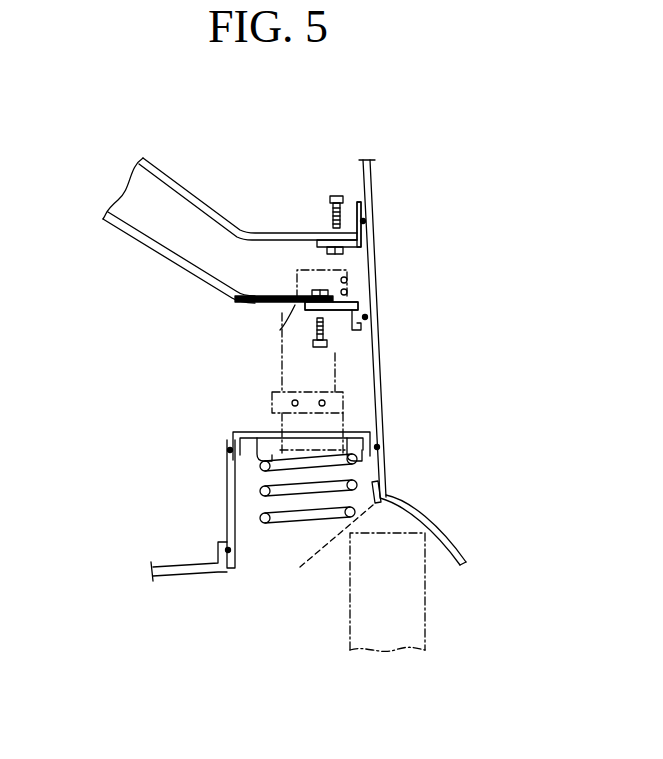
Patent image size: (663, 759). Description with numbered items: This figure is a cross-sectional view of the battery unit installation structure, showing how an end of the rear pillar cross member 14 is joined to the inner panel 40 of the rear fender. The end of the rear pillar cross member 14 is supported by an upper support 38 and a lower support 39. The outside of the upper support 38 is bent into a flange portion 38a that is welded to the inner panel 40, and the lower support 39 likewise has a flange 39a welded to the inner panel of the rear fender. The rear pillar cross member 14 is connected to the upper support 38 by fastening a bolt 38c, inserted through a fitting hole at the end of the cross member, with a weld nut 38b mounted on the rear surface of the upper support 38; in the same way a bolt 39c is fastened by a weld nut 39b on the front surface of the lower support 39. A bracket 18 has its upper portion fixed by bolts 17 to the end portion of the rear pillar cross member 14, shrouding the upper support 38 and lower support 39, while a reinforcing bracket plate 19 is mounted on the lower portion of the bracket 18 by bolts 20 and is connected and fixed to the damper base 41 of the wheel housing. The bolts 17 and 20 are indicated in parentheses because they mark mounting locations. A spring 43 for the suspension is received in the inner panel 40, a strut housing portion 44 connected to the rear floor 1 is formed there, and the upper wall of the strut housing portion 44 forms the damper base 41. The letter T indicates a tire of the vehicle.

The rear floor 1 is at (188, 572).
The rear pillar cross member 14 is at (182, 188).
The bolts 17 is at (350, 291).
The bracket 18 is at (373, 378).
The reinforcing bracket plate 19 is at (380, 422).
The bolts 20 is at (294, 402).
The upper support 38 is at (368, 258).
The flange portion 38a is at (362, 220).
The weld nut 38b is at (325, 252).
The bolt 38c is at (328, 210).
The lower support 39 is at (357, 296).
The flange 39a is at (343, 325).
The weld nut 39b is at (315, 292).
The bolt 39c is at (313, 342).
The inner panel of rear fender 40 is at (362, 323).
The damper base 41 is at (245, 433).
The spring 43 is at (293, 522).
The strut housing portion 44 is at (225, 478).
The tire T is at (425, 598).